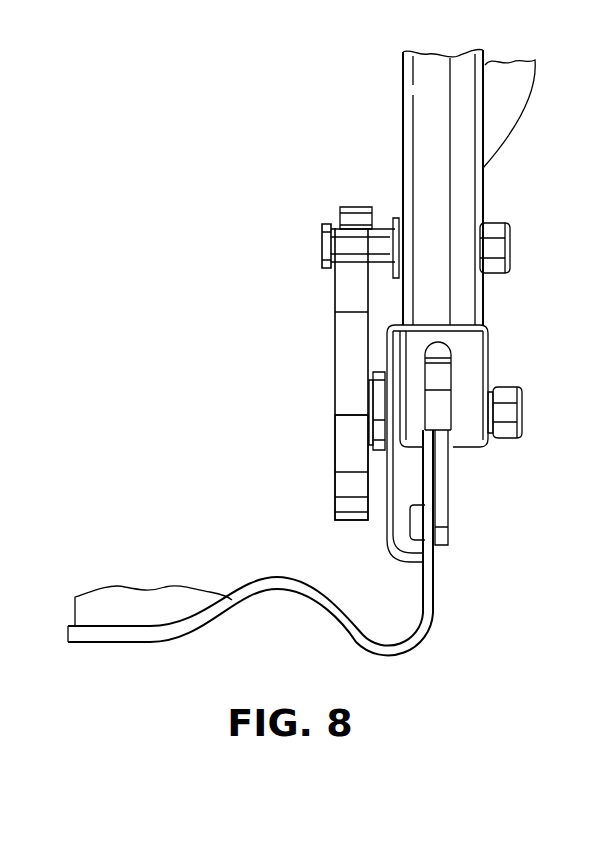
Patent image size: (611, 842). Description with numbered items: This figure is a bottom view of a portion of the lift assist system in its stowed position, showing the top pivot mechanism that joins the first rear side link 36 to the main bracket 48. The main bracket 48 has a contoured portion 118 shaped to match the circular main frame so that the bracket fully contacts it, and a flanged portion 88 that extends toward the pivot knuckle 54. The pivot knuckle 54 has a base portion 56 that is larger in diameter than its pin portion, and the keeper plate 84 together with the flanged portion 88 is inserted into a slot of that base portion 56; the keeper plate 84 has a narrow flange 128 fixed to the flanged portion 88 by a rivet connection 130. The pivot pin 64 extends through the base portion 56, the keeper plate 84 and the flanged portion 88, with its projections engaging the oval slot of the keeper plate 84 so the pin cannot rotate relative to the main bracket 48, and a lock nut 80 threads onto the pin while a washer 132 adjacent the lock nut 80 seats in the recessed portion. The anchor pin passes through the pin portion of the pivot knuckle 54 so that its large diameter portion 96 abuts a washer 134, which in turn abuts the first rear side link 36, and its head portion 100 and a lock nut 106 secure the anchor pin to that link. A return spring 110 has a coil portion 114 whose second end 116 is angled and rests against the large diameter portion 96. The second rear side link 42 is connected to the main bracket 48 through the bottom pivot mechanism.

The first rear side link 36 is at (470, 205).
The second rear side link 42 is at (513, 100).
The main bracket 48 is at (400, 655).
The pivot knuckle 54 is at (494, 320).
The base portion 56 is at (468, 440).
The pivot pin 64 is at (374, 462).
The lock nut 80 is at (510, 415).
The keeper plate 84 is at (455, 370).
The flanged portion 88 is at (420, 605).
The large diameter portion 96 is at (350, 260).
The head portion 100 is at (325, 245).
The lock nut 106 is at (500, 248).
The return spring 110 is at (330, 380).
The coil portion 114 is at (342, 445).
The second end 116 is at (352, 207).
The contoured portion 118 is at (155, 607).
The narrow flange 128 is at (446, 510).
The rivet connection 130 is at (418, 538).
The washer 132 is at (492, 386).
The washer 134 is at (393, 222).